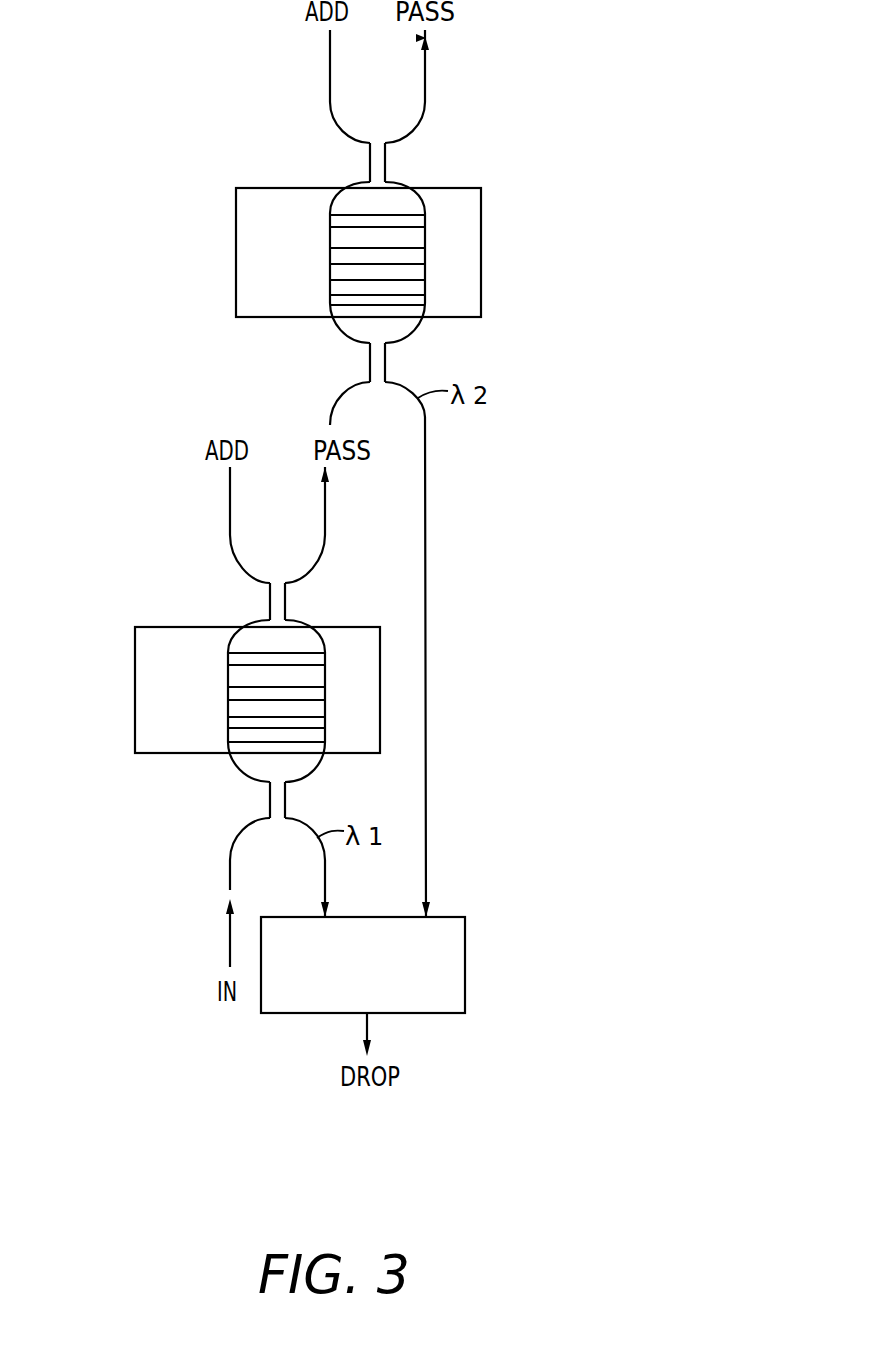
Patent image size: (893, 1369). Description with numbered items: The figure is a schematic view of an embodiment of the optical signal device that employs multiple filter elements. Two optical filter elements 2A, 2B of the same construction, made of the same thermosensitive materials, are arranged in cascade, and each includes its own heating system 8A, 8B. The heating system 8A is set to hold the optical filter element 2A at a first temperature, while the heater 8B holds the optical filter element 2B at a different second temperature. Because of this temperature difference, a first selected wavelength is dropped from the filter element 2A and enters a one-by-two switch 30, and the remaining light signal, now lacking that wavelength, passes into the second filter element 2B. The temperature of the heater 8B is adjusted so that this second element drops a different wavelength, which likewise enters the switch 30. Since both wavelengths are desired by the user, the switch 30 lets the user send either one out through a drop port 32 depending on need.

The optical filter element 2A is at (133, 603).
The optical filter element 2B is at (235, 168).
The heating system 8A is at (339, 635).
The heating system 8B is at (462, 263).
The 1×2 switch 30 is at (467, 951).
The drop port 32 is at (368, 1020).